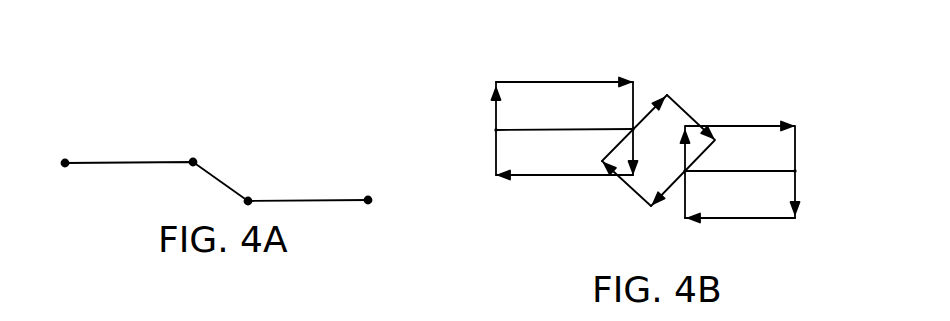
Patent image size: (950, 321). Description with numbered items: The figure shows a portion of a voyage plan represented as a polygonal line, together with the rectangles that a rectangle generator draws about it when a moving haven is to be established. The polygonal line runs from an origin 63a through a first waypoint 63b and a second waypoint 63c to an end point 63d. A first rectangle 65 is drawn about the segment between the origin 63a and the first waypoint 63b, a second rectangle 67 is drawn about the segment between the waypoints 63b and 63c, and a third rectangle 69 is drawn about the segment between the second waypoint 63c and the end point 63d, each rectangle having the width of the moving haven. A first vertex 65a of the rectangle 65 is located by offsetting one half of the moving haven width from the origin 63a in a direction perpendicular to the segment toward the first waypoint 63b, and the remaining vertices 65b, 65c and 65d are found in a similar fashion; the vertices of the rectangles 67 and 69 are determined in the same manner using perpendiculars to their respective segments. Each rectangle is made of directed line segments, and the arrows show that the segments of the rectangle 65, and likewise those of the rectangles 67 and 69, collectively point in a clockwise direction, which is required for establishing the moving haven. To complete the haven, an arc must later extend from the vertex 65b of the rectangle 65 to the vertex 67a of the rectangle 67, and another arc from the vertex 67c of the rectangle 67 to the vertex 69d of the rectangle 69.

In FIG. 4A, the origin 63a is at (67, 161).
In FIG. 4B, the origin 63a is at (494, 129).
In FIG. 4A, the first waypoint 63b is at (195, 160).
In FIG. 4B, the first waypoint 63b is at (631, 128).
In FIG. 4A, the second waypoint 63c is at (251, 199).
In FIG. 4B, the second waypoint 63c is at (688, 174).
In FIG. 4A, the end point 63d is at (368, 198).
In FIG. 4B, the end point 63d is at (796, 169).
In FIG. 4B, the first rectangle 65 is at (542, 155).
In FIG. 4B, the first vertex of the first rectangle 65a is at (495, 90).
In FIG. 4B, the vertex of the first rectangle 65b is at (630, 80).
In FIG. 4B, the vertex of the first rectangle 65c is at (495, 178).
In FIG. 4B, the vertex of the first rectangle 65d is at (631, 177).
In FIG. 4B, the second rectangle 67 is at (682, 112).
In FIG. 4B, the vertex of the second rectangle 67a is at (668, 94).
In FIG. 4B, the vertex of the second rectangle 67c is at (651, 206).
In FIG. 4B, the third rectangle 69 is at (760, 130).
In FIG. 4B, the vertex of the third rectangle 69d is at (685, 220).